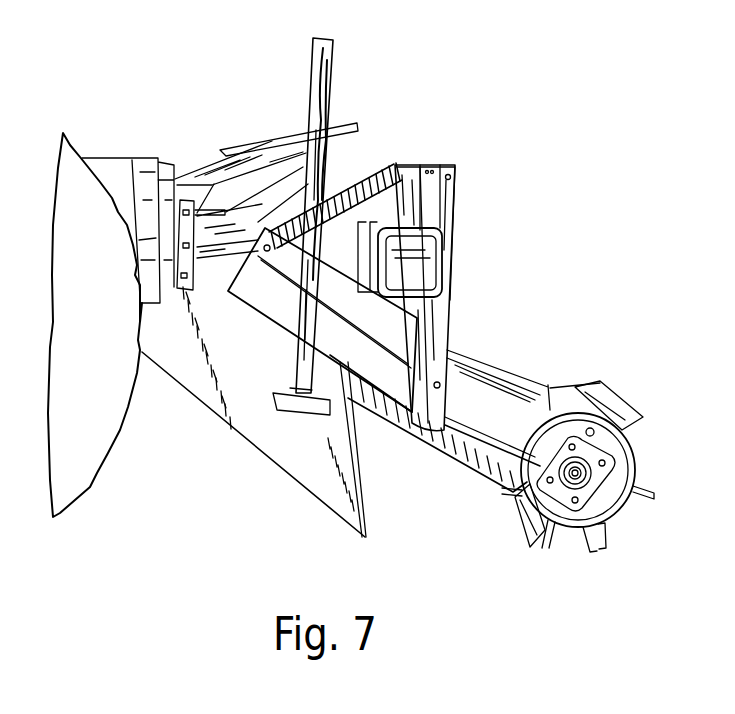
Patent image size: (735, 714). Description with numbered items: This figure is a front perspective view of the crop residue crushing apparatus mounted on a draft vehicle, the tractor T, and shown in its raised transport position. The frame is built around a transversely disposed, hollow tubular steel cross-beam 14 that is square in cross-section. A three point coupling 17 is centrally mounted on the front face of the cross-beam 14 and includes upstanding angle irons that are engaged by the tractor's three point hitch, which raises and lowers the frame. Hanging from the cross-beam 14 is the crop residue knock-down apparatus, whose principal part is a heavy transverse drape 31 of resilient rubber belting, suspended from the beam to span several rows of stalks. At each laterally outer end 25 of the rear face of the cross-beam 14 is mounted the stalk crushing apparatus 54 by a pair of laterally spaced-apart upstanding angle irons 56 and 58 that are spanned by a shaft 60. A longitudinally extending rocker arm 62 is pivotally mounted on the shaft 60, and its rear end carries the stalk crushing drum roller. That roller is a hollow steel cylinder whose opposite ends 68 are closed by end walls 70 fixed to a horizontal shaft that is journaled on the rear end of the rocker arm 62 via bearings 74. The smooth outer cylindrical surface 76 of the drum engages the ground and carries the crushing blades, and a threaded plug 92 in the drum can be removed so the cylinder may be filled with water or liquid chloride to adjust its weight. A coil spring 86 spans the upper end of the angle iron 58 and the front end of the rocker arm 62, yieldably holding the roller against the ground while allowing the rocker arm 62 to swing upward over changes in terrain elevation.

The tractor T is at (82, 118).
The three point coupling 17 is at (138, 140).
The laterally outer end 25 is at (367, 297).
The coil spring 86 is at (367, 167).
The angle iron 58 is at (418, 165).
The angle iron 56 is at (458, 187).
The cross-beam 14 is at (450, 257).
The shaft 60 is at (455, 383).
The rocker arm 62 is at (533, 448).
The drape 31 is at (350, 508).
The stalk crushing apparatus 54 is at (585, 340).
The end wall 70 is at (615, 503).
The bearing 74 is at (593, 453).
The threaded plug 92 is at (595, 428).
The end of cylinder 68 is at (637, 473).
The outer cylindrical surface 76 is at (573, 381).